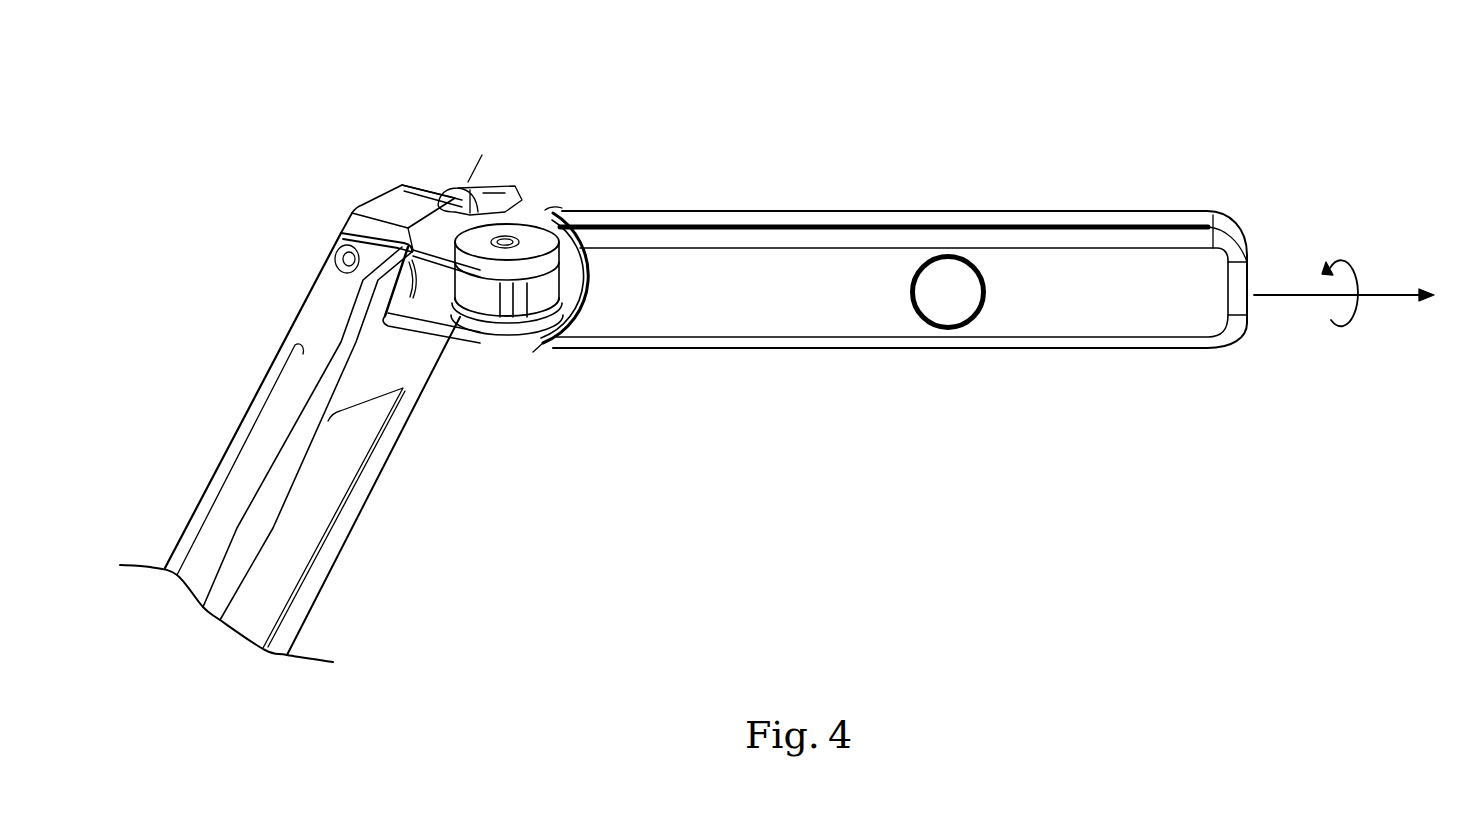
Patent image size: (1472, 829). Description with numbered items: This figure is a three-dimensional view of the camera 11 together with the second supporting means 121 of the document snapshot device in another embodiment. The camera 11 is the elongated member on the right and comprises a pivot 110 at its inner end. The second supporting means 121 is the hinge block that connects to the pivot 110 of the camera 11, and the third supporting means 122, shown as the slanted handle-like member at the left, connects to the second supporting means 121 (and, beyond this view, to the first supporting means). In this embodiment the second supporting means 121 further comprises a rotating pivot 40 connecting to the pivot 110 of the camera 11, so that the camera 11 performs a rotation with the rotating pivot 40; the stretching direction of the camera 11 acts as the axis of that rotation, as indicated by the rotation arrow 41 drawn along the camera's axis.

The camera 11 is at (841, 218).
The pivot 110 is at (537, 245).
The second supporting means 121 is at (408, 205).
The third supporting means 122 is at (322, 306).
The rotating pivot 40 is at (552, 337).
The rotation direction arrow 41 is at (1360, 293).